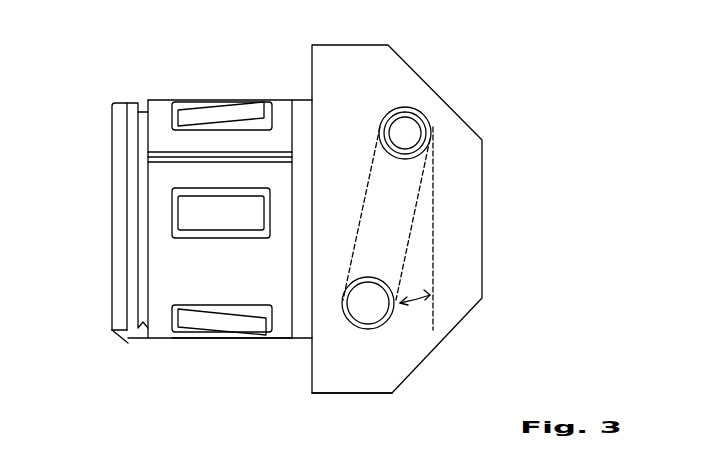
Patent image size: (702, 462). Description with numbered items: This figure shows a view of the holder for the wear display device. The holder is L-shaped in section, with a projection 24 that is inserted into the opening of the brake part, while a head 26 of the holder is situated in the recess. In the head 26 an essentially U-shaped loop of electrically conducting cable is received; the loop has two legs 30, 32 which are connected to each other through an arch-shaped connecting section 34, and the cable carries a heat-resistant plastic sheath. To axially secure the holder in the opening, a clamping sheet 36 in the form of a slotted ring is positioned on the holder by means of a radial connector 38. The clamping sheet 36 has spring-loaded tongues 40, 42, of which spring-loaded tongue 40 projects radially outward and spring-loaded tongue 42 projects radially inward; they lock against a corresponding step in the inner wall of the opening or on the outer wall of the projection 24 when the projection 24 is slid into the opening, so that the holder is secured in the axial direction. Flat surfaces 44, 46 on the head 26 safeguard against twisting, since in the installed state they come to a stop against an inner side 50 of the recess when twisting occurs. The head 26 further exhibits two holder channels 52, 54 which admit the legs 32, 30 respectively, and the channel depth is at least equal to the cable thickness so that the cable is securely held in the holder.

The projection 24 is at (112, 243).
The head 26 is at (452, 68).
The leg 30 is at (370, 303).
The leg 32 is at (407, 132).
The connecting section 34 is at (420, 195).
The clamping sheet 36 is at (172, 338).
The radial connector 38 is at (128, 343).
The spring-loaded tongue 40 is at (263, 102).
The spring-loaded tongue 42 is at (172, 190).
The flat surface 44 is at (367, 45).
The flat surface 46 is at (378, 393).
The inner side 50 is at (416, 228).
The holder channel 52 is at (403, 116).
The holder channel 54 is at (358, 315).